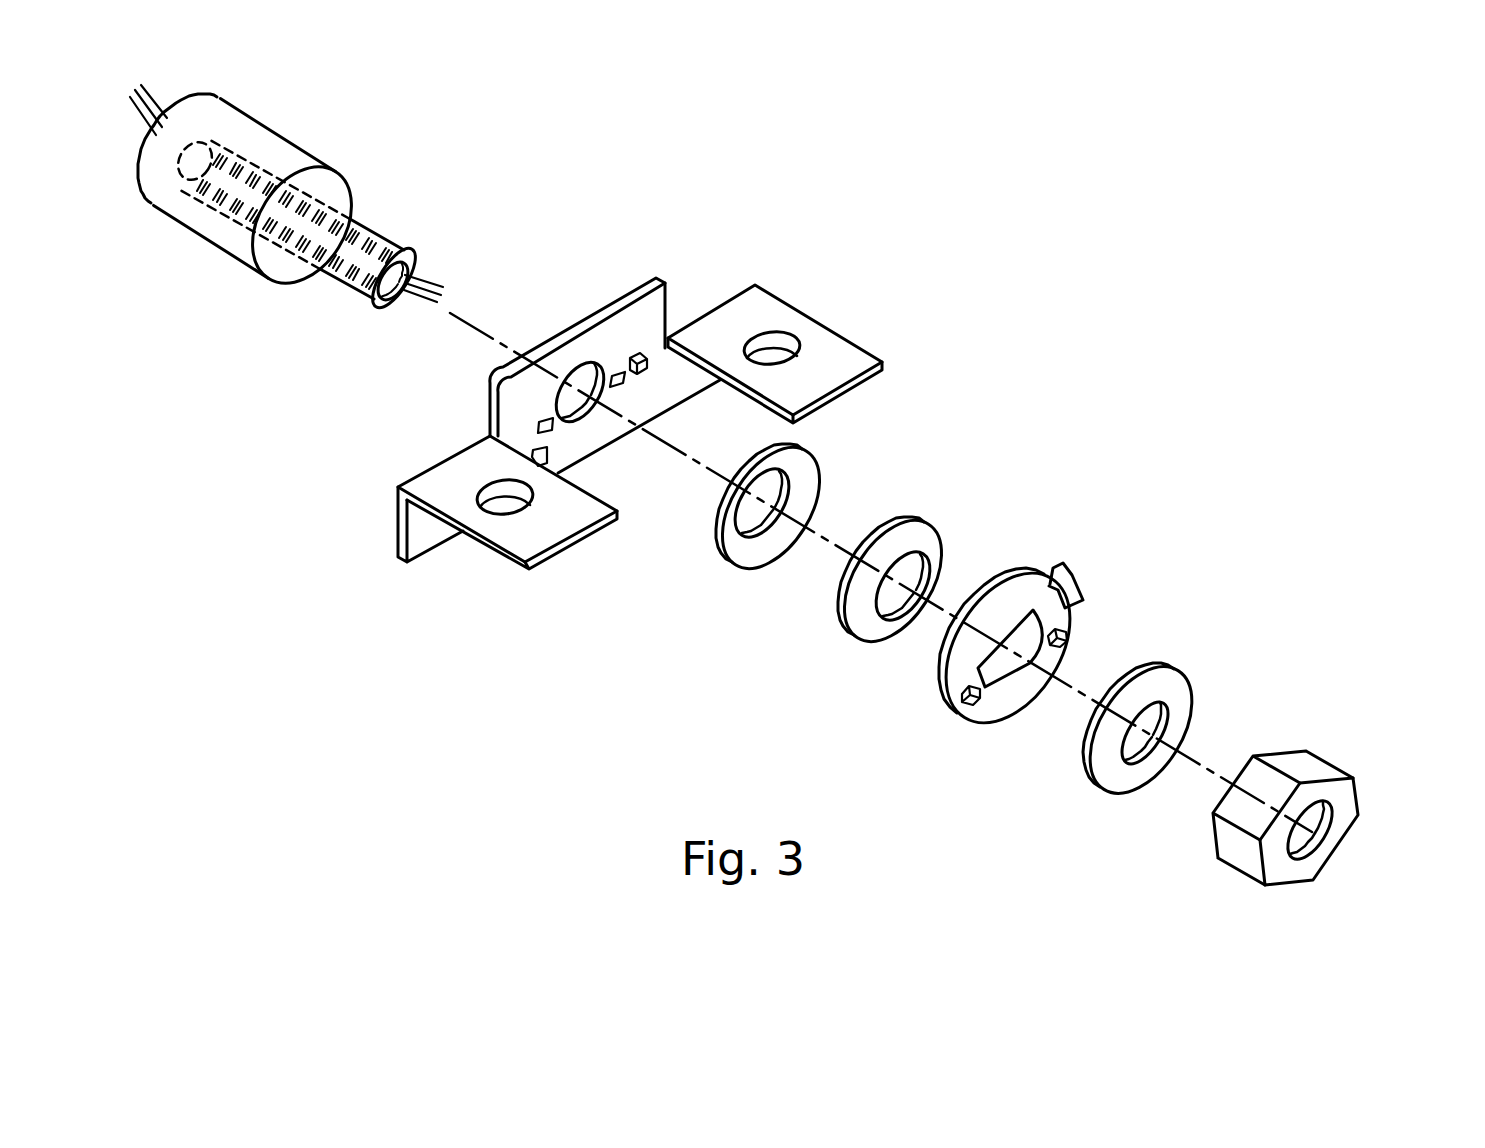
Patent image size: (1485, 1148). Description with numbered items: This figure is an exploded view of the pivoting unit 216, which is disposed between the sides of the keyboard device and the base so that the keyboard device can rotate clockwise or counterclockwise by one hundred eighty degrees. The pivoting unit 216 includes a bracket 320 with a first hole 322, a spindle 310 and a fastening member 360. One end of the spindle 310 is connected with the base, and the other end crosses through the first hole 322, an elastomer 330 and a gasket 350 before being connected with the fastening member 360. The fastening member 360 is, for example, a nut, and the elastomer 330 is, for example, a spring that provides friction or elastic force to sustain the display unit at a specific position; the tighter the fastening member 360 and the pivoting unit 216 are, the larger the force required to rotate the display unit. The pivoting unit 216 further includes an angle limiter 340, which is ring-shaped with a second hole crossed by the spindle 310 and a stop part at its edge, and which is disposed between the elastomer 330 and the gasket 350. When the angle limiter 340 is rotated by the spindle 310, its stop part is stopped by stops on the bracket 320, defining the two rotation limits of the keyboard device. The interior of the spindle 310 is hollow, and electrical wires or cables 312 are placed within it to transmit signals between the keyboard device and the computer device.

The pivoting unit 216 is at (1114, 205).
The spindle 310 is at (287, 142).
The electrical wires or cables 312 is at (428, 273).
The bracket 320 is at (803, 312).
The first hole 322 is at (585, 378).
The elastomer 330 is at (820, 468).
The angle limiter 340 is at (1080, 583).
The gasket 350 is at (1190, 685).
The fastening member 360 is at (1327, 757).